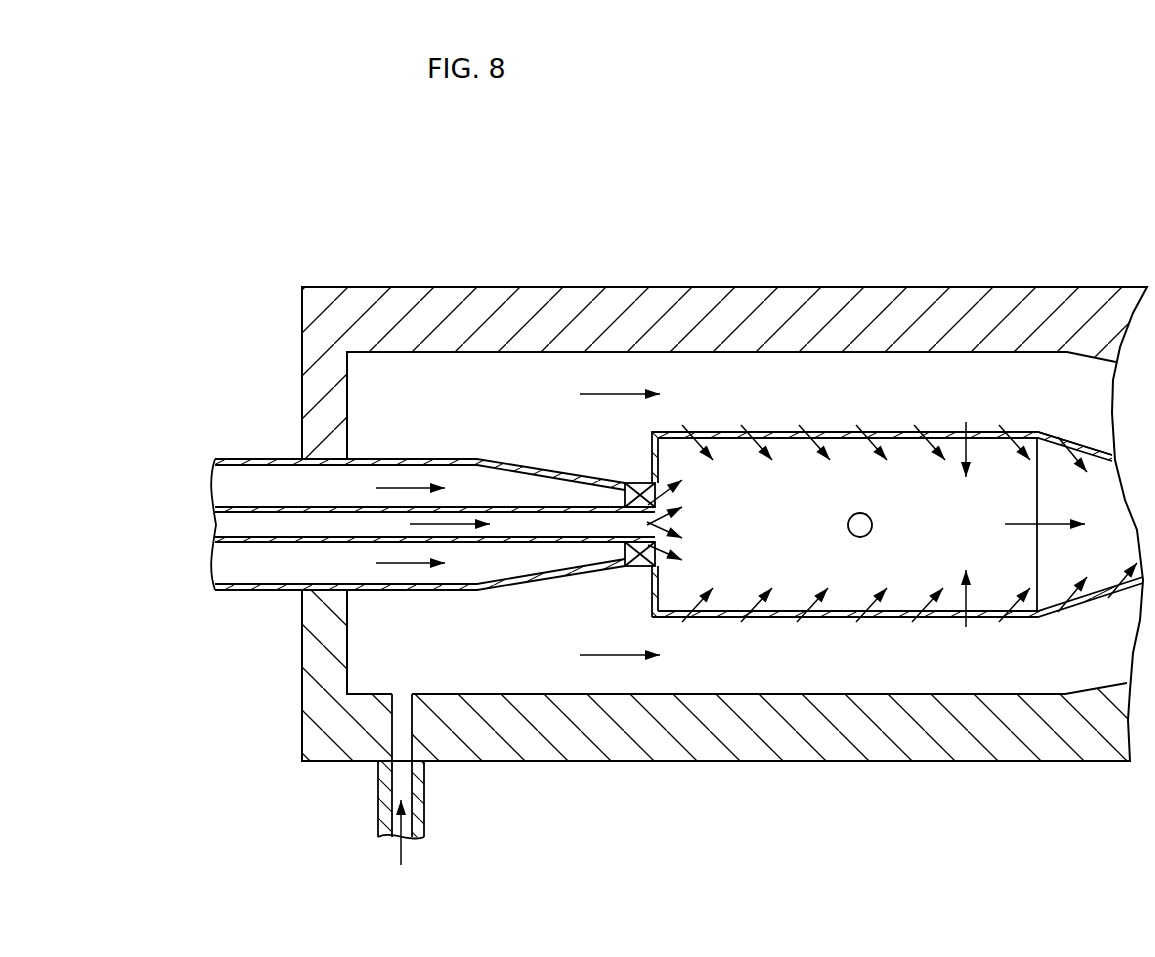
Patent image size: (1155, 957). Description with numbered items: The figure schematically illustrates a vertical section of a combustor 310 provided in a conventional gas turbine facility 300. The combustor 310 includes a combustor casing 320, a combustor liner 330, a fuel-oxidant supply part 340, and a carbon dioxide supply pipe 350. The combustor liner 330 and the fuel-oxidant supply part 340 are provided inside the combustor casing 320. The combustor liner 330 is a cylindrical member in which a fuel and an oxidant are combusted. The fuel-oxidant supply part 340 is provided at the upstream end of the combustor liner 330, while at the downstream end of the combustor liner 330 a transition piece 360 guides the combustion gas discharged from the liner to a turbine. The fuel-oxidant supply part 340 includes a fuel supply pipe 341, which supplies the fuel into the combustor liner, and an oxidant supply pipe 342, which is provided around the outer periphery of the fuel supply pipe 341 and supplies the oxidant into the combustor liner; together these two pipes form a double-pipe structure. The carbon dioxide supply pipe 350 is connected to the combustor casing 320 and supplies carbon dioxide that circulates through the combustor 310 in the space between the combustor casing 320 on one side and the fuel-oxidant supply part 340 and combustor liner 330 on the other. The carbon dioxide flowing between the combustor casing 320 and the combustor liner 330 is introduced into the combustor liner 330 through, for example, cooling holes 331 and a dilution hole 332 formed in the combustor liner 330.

The gas turbine facility 300 is at (1086, 207).
The combustor 310 is at (909, 266).
The combustor casing 320 is at (535, 297).
The combustor liner 330 is at (766, 432).
The cooling holes 331 is at (803, 618).
The dilution hole 332 is at (866, 523).
The fuel-oxidant supply part 340 is at (421, 566).
The fuel supply pipe 341 is at (245, 541).
The oxidant supply pipe 342 is at (247, 590).
The carbon dioxide supply pipe 350 is at (387, 807).
The transition piece 360 is at (1074, 442).